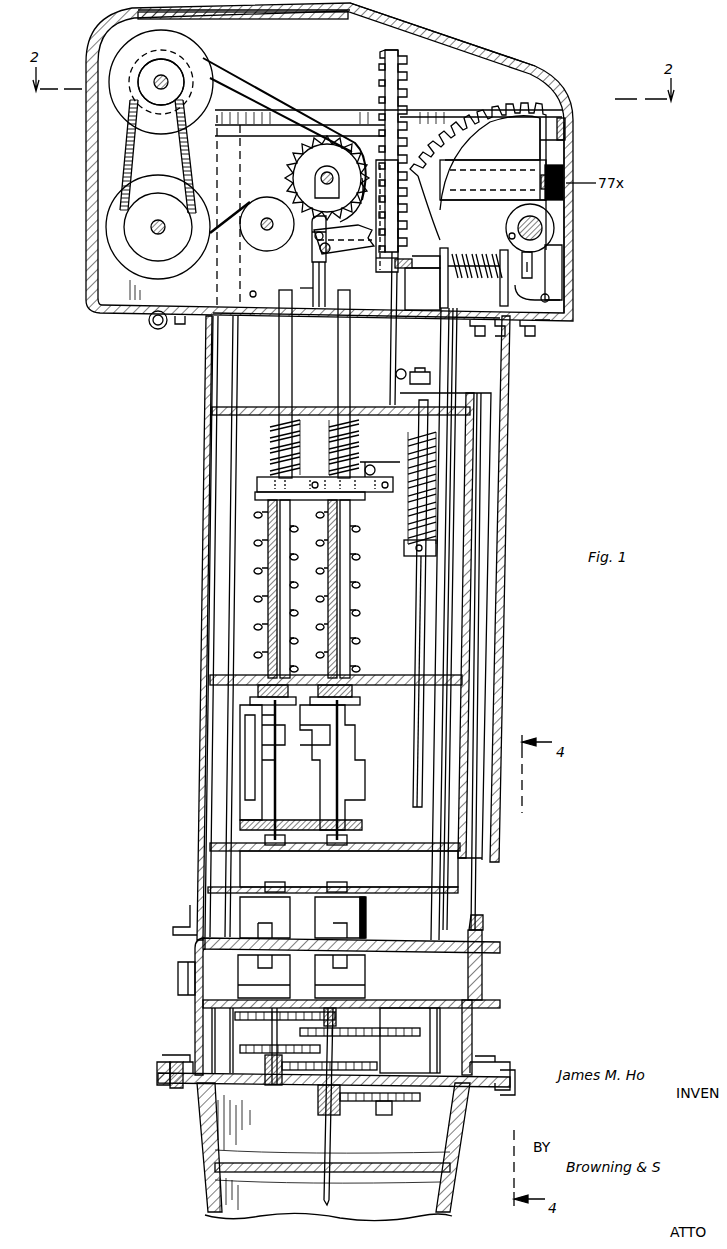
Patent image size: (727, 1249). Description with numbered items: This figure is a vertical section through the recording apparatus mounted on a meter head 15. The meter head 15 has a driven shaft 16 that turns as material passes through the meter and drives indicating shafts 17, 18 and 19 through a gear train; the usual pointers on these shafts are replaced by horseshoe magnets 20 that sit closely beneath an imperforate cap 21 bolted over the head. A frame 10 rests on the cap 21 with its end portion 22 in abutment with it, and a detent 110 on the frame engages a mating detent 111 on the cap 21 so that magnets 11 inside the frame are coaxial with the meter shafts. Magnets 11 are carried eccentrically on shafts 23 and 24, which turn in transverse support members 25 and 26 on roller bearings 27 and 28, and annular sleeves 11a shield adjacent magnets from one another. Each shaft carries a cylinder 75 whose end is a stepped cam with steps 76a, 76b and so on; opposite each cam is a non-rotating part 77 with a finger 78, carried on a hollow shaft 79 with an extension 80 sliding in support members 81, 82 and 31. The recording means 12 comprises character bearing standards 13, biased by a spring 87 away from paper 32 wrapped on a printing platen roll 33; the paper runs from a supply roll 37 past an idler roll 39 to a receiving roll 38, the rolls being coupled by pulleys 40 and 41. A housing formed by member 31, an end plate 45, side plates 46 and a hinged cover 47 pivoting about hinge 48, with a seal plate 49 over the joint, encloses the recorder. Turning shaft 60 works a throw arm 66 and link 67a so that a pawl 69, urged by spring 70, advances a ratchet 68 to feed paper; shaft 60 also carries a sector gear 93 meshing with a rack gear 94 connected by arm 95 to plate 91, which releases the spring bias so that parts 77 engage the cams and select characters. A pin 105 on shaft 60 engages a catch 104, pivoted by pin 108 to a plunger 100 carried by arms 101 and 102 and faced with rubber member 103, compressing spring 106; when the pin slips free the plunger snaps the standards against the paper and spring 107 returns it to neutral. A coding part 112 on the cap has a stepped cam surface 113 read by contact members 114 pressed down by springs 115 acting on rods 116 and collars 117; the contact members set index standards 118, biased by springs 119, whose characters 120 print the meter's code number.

The frame 10 is at (206, 602).
The magnets 11 is at (245, 915).
The annular sleeve 11a is at (365, 924).
The recording means 12 is at (182, 155).
The character bearing standards 13 is at (406, 46).
The meter head 15 is at (190, 1110).
The driven shaft 16 is at (333, 1137).
The indicating meter shaft 17 is at (295, 1000).
The indicating meter shaft 18 is at (345, 1006).
The indicating meter shaft 19 is at (395, 1000).
The magnets 20 is at (240, 977).
The imperforate cover 21 is at (470, 1034).
The bottom or end portion 22 is at (404, 946).
The shaft 23 is at (270, 772).
The shaft 24 is at (345, 857).
The transverse support member 25 is at (408, 890).
The transverse support member 26 is at (408, 846).
The roller bearing 27 is at (275, 878).
The roller bearing 28 is at (348, 840).
The transverse support member 31 is at (408, 322).
The paper 32 is at (255, 95).
The printing platen roll 33 is at (325, 140).
The paper supply roll 37 is at (98, 255).
The paper receiving roll 38 is at (200, 58).
The idler roll 39 is at (245, 248).
The pulley 40 is at (148, 82).
The pulley 41 is at (140, 222).
The end plate 45 is at (574, 232).
The rectangular side plates 46 is at (560, 147).
The hinged cover 47 is at (505, 58).
The hinge 48 is at (150, 323).
The seal plate 49 is at (340, 115).
The shaft 60 is at (550, 232).
The throw arm 66 is at (505, 190).
The link 67a is at (300, 172).
The ratchet 68 is at (358, 160).
The pawl 69 is at (318, 286).
The spring 70 is at (345, 231).
The cylinder 75 is at (192, 786).
The step 76a is at (250, 712).
The step 76b is at (258, 736).
The parts 77 is at (240, 680).
The finger or arm portion 78 is at (240, 692).
The hollow shaft 79 is at (266, 600).
The extension 80 is at (279, 343).
The transverse support member 81 is at (370, 680).
The transverse support member 82 is at (262, 407).
The spring 87 is at (440, 444).
The plate 91 is at (370, 498).
The sector gear 93 is at (492, 115).
The rack gear 94 is at (400, 90).
The arm 95 is at (300, 288).
The plunger 100 is at (545, 290).
The arm 101 is at (440, 302).
The arm 102 is at (520, 325).
The face member 103 is at (403, 268).
The catch portion 104 is at (565, 248).
The pin 105 is at (540, 225).
The spring 106 is at (488, 250).
The spring 107 is at (443, 248).
The pin 108 is at (535, 266).
The detent 110 is at (188, 915).
The mating detent 111 is at (178, 978).
The part 112 is at (482, 968).
The stepped cam surface 113 is at (485, 941).
The contact members 114 is at (482, 522).
The springs 115 is at (430, 512).
The rods 116 is at (418, 610).
The collars 117 is at (440, 548).
The character bearing standards 118 is at (398, 342).
The springs 119 is at (420, 372).
The characters 120 is at (378, 272).